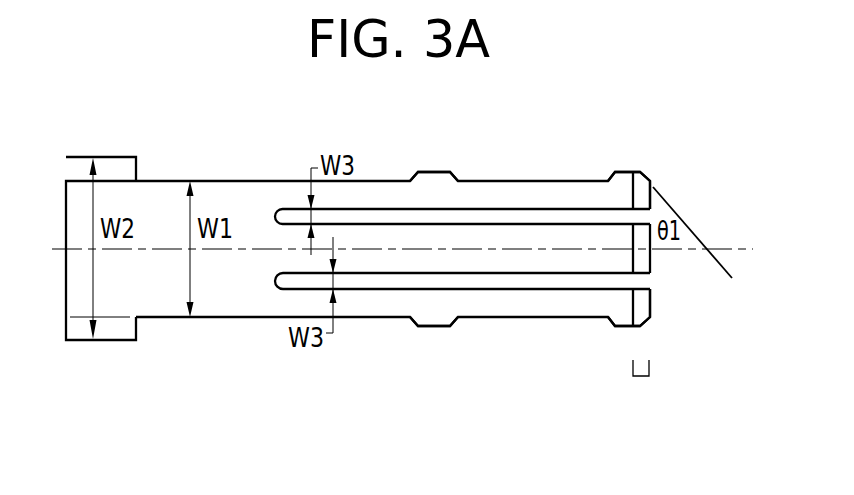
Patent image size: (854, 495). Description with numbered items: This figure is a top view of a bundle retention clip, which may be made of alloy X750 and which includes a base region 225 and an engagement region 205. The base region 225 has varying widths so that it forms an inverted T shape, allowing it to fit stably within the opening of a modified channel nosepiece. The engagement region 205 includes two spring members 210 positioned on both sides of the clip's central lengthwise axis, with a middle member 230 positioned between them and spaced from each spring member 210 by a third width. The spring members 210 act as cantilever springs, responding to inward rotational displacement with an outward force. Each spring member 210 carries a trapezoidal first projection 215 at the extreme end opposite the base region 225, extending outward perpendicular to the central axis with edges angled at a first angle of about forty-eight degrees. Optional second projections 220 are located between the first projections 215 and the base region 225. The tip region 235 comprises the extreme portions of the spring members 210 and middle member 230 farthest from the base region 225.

The engagement region 205 is at (427, 224).
The spring member 210 is at (507, 181).
The first projection 215 is at (642, 172).
The second projection 220 is at (432, 172).
The base region 225 is at (258, 123).
The middle member 230 is at (477, 275).
The tip region 235 is at (642, 385).